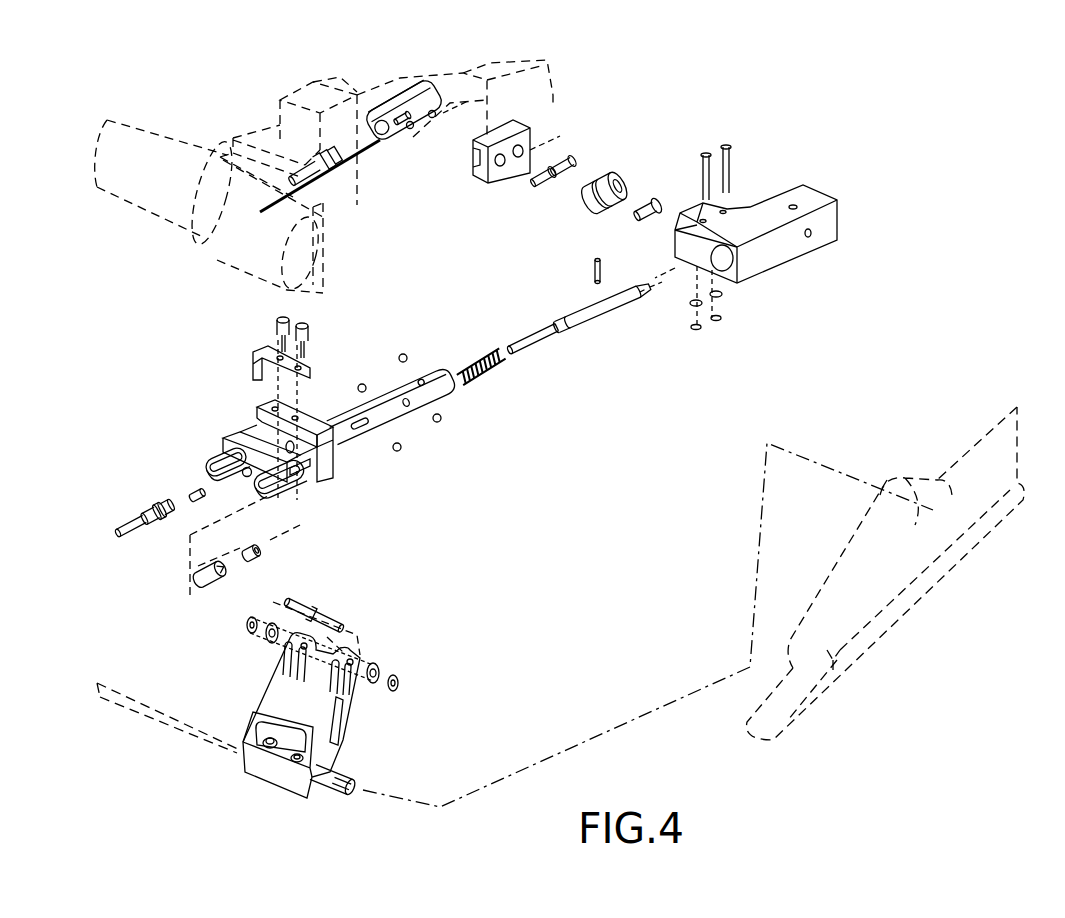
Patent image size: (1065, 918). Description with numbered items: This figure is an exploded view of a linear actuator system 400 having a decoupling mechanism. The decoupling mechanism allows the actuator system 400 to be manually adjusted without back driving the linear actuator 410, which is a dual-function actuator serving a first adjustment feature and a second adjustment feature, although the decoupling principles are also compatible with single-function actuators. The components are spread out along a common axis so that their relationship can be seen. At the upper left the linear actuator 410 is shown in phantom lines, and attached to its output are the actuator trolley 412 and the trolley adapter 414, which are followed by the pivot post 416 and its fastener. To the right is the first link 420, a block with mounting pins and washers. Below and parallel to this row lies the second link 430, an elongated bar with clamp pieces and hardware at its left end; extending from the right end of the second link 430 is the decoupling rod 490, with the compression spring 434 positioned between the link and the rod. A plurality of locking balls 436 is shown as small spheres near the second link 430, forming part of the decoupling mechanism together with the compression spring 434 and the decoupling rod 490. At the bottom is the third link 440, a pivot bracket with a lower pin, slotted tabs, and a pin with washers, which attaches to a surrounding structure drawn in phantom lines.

The linear actuator system 400 is at (948, 128).
The linear actuator 410 is at (355, 66).
The actuator trolley 412 is at (424, 128).
The trolley adapter 414 is at (530, 140).
The pivot post 416 is at (615, 170).
The first link 420 is at (830, 194).
The second link 430 is at (355, 445).
The compression spring 434 is at (490, 368).
The locking balls 436 is at (403, 353).
The third link 440 is at (345, 700).
The decoupling rod 490 is at (600, 328).